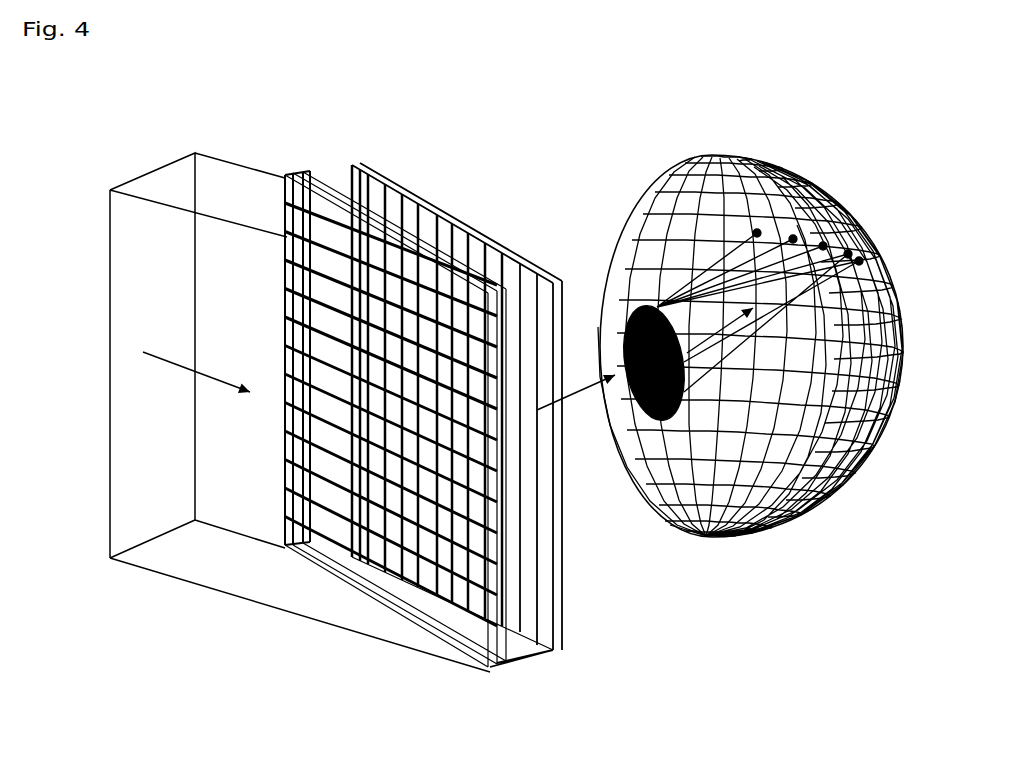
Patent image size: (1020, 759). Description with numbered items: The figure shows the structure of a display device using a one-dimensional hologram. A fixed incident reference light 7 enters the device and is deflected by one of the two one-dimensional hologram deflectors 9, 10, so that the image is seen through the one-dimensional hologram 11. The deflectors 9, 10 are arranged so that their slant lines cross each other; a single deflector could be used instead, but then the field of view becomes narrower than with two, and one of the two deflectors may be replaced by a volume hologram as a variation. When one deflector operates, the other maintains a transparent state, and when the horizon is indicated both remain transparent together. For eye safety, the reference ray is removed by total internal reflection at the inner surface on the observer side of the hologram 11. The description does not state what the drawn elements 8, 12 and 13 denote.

The fixed incident reference light 7 is at (200, 163).
The measurement points 8 is at (862, 260).
The one-dimensional hologram deflector 9 is at (490, 670).
The one-dimensional hologram deflector 10 is at (505, 660).
The one-dimensional hologram 11 is at (553, 650).
The light receiving aperture 12 is at (648, 418).
The hemispherical screen 13 is at (705, 535).